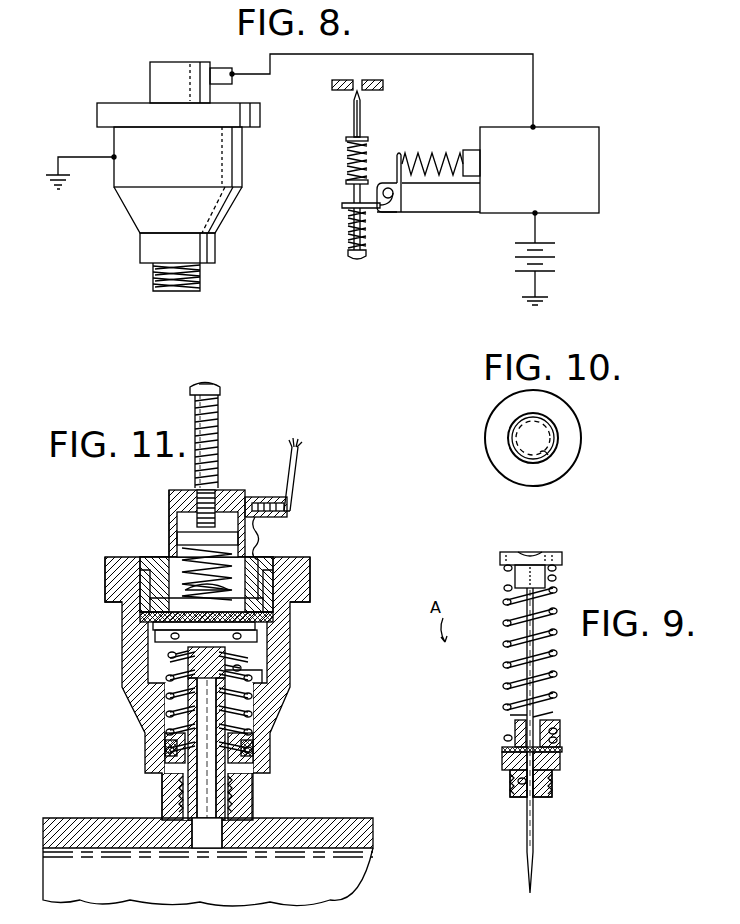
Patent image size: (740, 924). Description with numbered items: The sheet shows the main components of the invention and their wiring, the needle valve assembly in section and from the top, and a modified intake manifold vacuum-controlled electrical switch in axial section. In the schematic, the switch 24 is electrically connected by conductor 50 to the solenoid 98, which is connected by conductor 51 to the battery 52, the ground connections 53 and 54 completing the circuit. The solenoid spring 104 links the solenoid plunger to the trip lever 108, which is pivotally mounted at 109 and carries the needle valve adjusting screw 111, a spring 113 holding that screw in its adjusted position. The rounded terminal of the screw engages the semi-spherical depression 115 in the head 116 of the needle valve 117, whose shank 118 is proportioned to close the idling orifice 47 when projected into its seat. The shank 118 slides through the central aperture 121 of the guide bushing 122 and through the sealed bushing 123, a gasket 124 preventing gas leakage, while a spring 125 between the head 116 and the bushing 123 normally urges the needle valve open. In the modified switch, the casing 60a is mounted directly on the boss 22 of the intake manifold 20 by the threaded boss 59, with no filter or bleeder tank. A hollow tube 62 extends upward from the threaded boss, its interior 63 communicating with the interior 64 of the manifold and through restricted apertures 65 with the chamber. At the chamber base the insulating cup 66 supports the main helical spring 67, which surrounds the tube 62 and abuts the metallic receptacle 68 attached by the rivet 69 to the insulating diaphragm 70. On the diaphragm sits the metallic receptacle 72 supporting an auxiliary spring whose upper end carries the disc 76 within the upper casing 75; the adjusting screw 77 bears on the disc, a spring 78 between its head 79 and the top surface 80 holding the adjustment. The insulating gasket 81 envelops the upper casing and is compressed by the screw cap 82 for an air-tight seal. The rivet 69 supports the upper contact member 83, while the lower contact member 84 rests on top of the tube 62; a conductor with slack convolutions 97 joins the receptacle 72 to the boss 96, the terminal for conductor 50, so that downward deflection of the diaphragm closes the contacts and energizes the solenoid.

In FIG. 11, the intake manifold 20 is at (325, 818).
In FIG. 11, the boss 22 is at (253, 790).
In FIG. 8, the intake manifold vacuum-controlled electrical switch 24 is at (251, 163).
In FIG. 8, the idling orifice 47 is at (356, 78).
In FIG. 8, the conductor 50 is at (403, 54).
In FIG. 11, the conductor 50 is at (295, 470).
In FIG. 8, the conductor 51 is at (537, 228).
In FIG. 8, the battery 52 is at (549, 254).
In FIG. 8, the ground connection 53 is at (541, 298).
In FIG. 8, the ground connection 54 is at (52, 185).
In FIG. 11, the threaded boss 59 is at (178, 790).
In FIG. 11, the casing 60a is at (122, 663).
In FIG. 11, the hollow tube 62 is at (249, 700).
In FIG. 11, the interior of tube 63 is at (218, 720).
In FIG. 11, the interior of intake manifold 64 is at (196, 845).
In FIG. 11, the restricted apertures 65 is at (165, 737).
In FIG. 11, the insulating cup 66 is at (165, 750).
In FIG. 11, the main helical spring 67 is at (262, 668).
In FIG. 11, the metallic receptacle 68 is at (155, 633).
In FIG. 11, the rivet 69 is at (140, 616).
In FIG. 11, the insulating diaphragm 70 is at (270, 632).
In FIG. 11, the metallic receptacle 72 is at (275, 615).
In FIG. 11, the upper casing 75 is at (169, 510).
In FIG. 11, the disc 76 is at (179, 538).
In FIG. 11, the adjusting screw 77 is at (214, 427).
In FIG. 11, the spring 78 is at (195, 422).
In FIG. 11, the head of screw 79 is at (218, 386).
In FIG. 11, the top surface of casing 80 is at (228, 490).
In FIG. 11, the insulating gasket 81 is at (152, 557).
In FIG. 11, the screw cap 82 is at (115, 580).
In FIG. 11, the upper contact member 83 is at (174, 657).
In FIG. 11, the lower contact member 84 is at (226, 652).
In FIG. 11, the boss 96 is at (258, 497).
In FIG. 11, the convolutions 97 is at (266, 550).
In FIG. 8, the solenoid 98 is at (603, 131).
In FIG. 8, the solenoid spring 104 is at (446, 153).
In FIG. 8, the trip lever 108 is at (408, 194).
In FIG. 8, the pivot 109 is at (401, 212).
In FIG. 8, the needle valve adjusting screw 111 is at (348, 254).
In FIG. 8, the spring 113 is at (348, 233).
In FIG. 10, the semi-spherical depression 115 is at (548, 455).
In FIG. 9, the semi-spherical depression 115 is at (526, 551).
In FIG. 10, the head of needle valve 116 is at (581, 426).
In FIG. 9, the head of needle valve 116 is at (556, 552).
In FIG. 8, the needle valve 117 is at (342, 173).
In FIG. 9, the needle valve 117 is at (519, 621).
In FIG. 8, the shank of needle valve 118 is at (361, 112).
In FIG. 9, the shank of needle valve 118 is at (534, 832).
In FIG. 9, the central aperture 121 is at (520, 782).
In FIG. 9, the guide bushing 122 is at (553, 784).
In FIG. 9, the sealed bushing 123 is at (545, 722).
In FIG. 9, the gasket 124 is at (563, 750).
In FIG. 9, the spring 125 is at (504, 590).